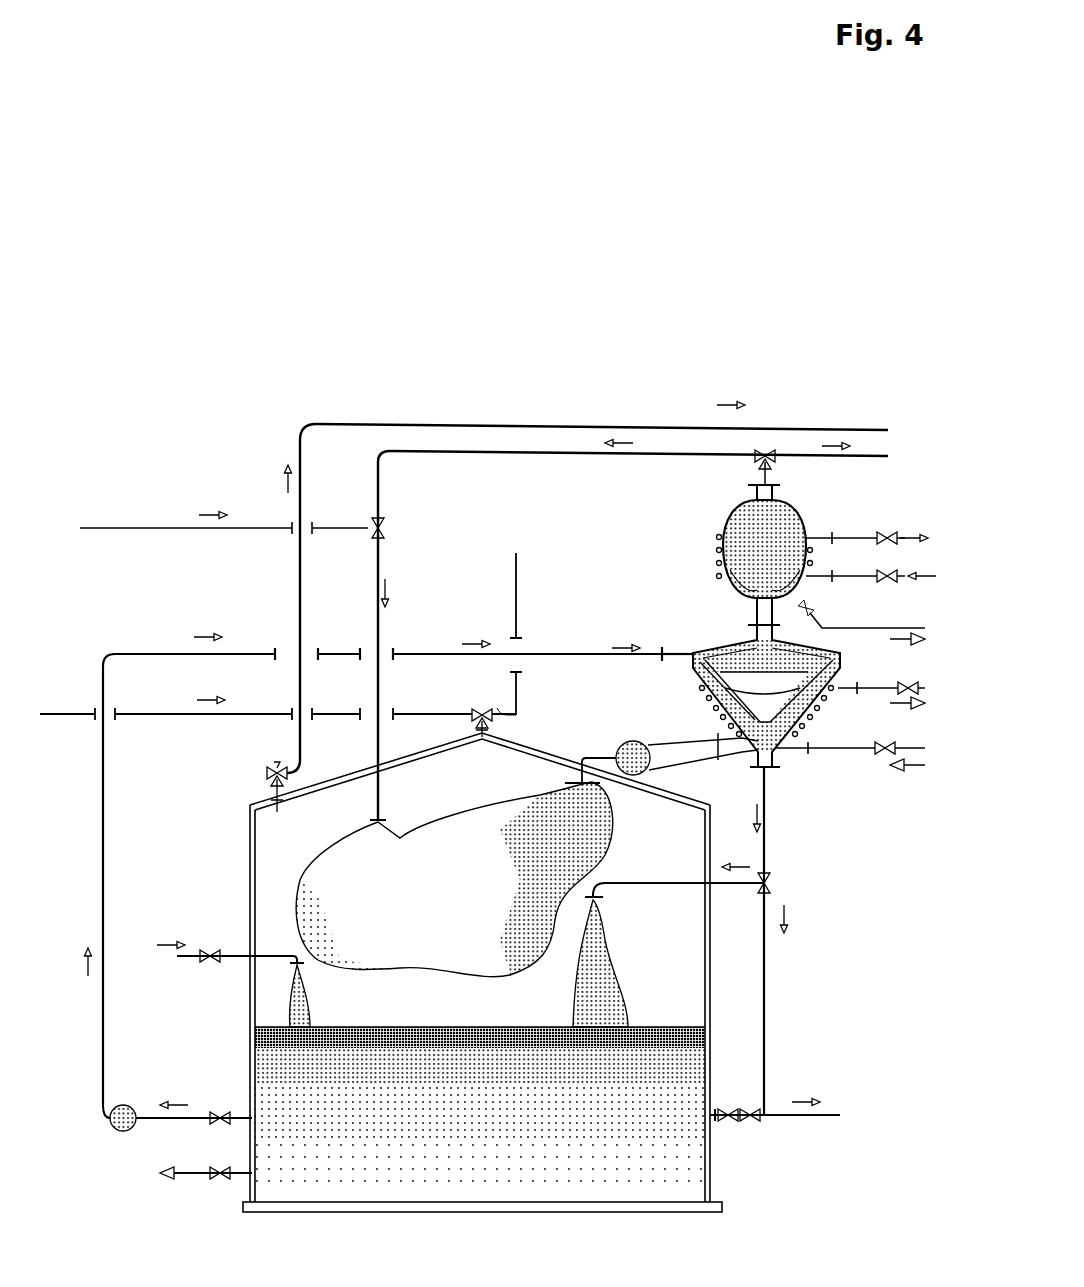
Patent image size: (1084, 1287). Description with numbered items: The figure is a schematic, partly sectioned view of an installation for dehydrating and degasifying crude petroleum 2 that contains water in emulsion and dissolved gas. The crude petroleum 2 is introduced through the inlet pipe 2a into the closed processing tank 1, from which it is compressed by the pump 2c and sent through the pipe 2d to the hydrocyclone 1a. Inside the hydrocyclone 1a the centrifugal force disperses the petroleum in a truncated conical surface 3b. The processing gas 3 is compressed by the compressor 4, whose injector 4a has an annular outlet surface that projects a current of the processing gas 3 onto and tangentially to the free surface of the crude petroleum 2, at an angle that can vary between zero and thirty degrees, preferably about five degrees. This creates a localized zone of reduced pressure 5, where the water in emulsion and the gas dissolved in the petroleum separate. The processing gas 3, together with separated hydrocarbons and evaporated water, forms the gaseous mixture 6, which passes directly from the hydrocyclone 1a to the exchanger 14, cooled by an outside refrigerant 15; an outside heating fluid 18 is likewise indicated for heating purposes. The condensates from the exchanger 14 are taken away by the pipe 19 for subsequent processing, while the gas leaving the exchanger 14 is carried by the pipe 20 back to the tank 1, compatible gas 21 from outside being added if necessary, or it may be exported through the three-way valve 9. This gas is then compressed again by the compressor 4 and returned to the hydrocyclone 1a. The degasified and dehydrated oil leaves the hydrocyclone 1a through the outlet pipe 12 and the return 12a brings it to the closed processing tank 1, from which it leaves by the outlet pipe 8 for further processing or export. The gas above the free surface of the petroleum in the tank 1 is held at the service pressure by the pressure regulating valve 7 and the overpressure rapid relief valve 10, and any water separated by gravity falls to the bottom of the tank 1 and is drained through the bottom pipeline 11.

The closed processing tank 1 is at (250, 843).
The hydrocyclone 1a is at (710, 642).
The crude petroleum to be processed 2 is at (307, 1010).
The inlet pipe 2a is at (232, 957).
The pump 2c is at (123, 1104).
The pipe 2d is at (612, 653).
The processing gas 3 is at (832, 667).
The truncated conical surface 3b is at (700, 672).
The compressor 4 is at (637, 742).
The injector 4a is at (720, 722).
The localized zone of reduced pressure 5 is at (764, 683).
The gaseous mixture 6 is at (548, 810).
The pressure regulating valve 7 is at (480, 712).
The outlet pipe 8 is at (775, 1100).
The three-way valve 9 is at (760, 455).
The overpressure rapid relief valve 10 is at (270, 770).
The bottom pipeline 11 is at (225, 1175).
The outlet pipe 12 is at (767, 800).
The return 12a is at (722, 883).
The exchanger 14 is at (735, 508).
The outside refrigerant 15 is at (813, 580).
The outside heating fluid 18 is at (885, 745).
The pipe 19 is at (880, 628).
The pipe 20 is at (518, 452).
The compatible gas 21 is at (317, 528).